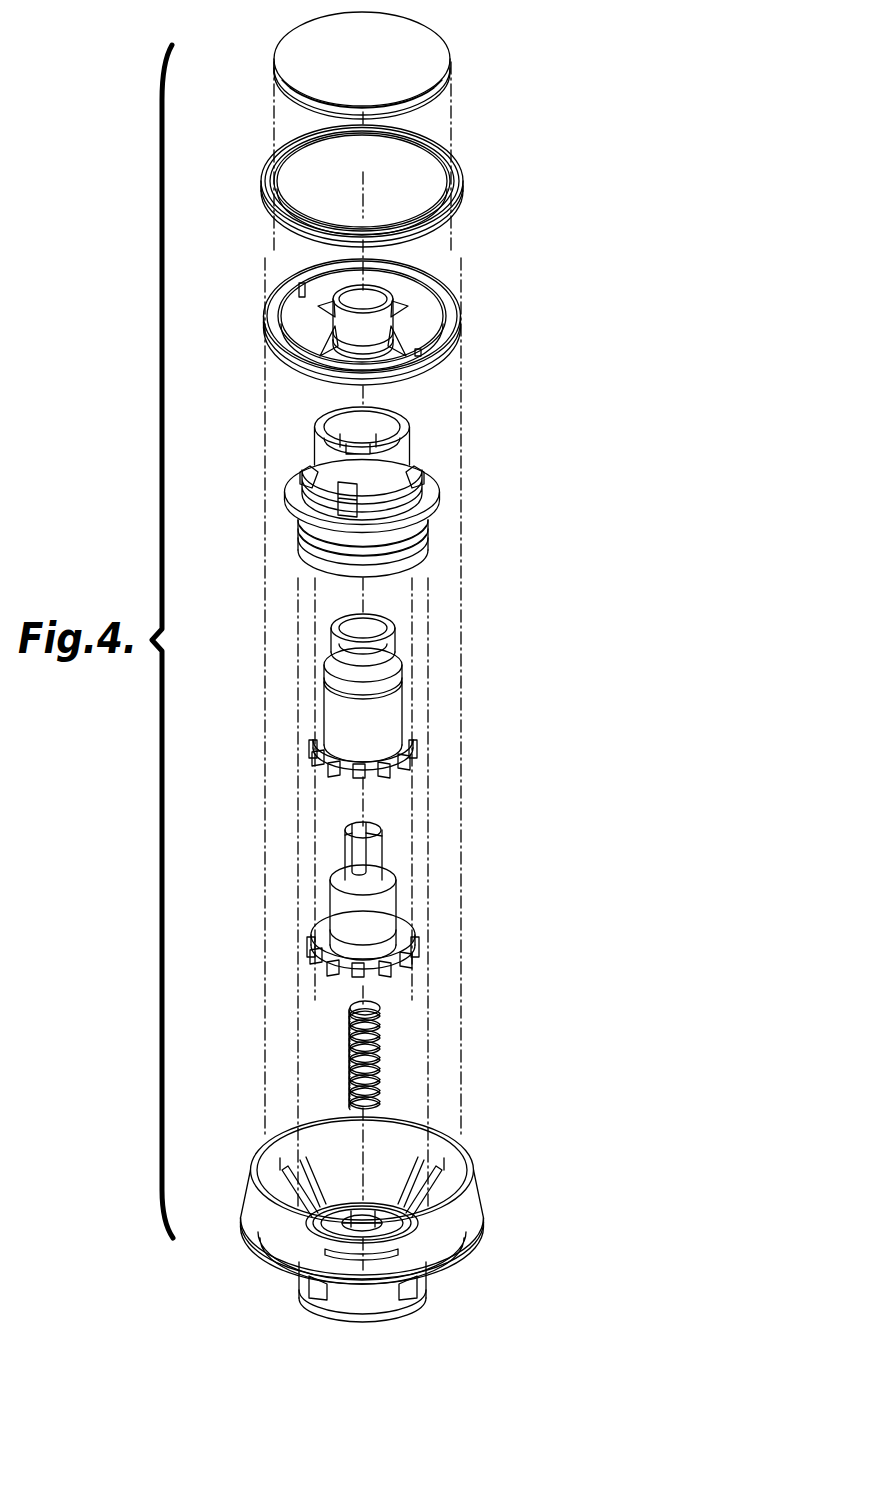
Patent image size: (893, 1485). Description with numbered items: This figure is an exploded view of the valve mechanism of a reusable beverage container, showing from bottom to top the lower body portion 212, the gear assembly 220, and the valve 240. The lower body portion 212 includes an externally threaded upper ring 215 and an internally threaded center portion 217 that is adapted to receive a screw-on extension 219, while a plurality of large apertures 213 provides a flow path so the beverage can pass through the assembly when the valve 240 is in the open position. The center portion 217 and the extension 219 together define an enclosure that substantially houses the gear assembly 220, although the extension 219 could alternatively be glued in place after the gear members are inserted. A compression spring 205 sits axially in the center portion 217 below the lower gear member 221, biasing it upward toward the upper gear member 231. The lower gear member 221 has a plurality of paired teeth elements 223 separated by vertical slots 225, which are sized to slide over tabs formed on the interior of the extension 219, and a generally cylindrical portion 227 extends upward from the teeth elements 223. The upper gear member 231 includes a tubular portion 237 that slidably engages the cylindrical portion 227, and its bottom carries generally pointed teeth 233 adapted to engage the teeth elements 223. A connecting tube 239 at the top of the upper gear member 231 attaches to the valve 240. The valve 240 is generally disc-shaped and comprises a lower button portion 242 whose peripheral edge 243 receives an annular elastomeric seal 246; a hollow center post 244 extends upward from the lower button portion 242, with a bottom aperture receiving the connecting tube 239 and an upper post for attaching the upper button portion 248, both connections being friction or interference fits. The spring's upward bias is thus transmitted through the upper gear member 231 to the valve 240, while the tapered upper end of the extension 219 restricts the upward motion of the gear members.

The upper button portion 248 is at (435, 42).
The annular elastomeric seal 246 is at (463, 186).
The hollow center post 244 is at (372, 294).
The peripheral edge 243 is at (459, 316).
The lower button portion 242 is at (408, 320).
The valve 240 is at (561, 163).
The extension 219 is at (442, 498).
The connecting tube 239 is at (370, 668).
The upper gear member 231 is at (372, 703).
The tubular portion 237 is at (367, 718).
The pointed teeth 233 is at (405, 762).
The gear assembly 220 is at (424, 899).
The lower gear member 221 is at (397, 891).
The cylindrical portion 227 is at (382, 915).
The teeth elements 223 is at (365, 958).
The vertical slots 225 is at (383, 978).
The compression spring 205 is at (383, 1058).
The large apertures 213 is at (390, 1172).
The externally threaded upper ring 215 is at (466, 1180).
The lower body portion 212 is at (404, 1207).
The center portion 217 is at (342, 1305).